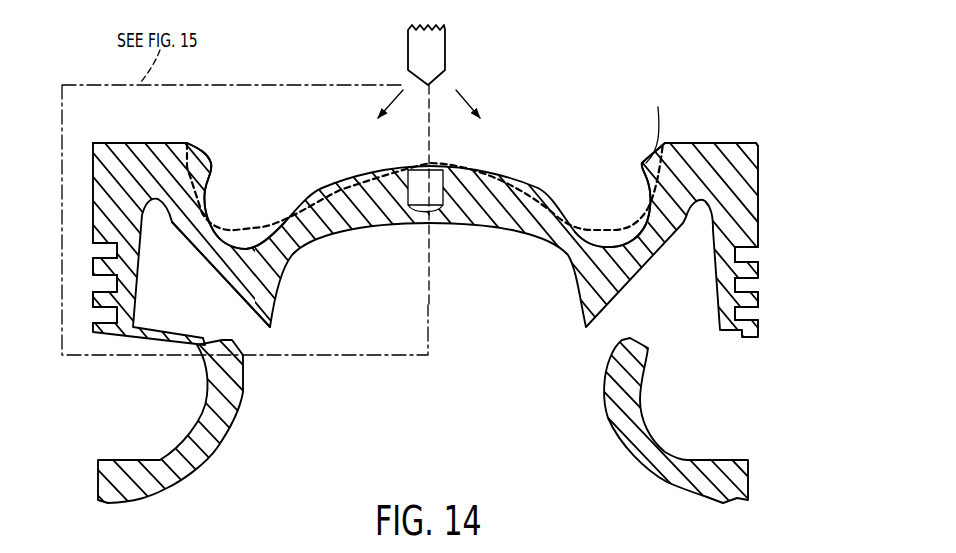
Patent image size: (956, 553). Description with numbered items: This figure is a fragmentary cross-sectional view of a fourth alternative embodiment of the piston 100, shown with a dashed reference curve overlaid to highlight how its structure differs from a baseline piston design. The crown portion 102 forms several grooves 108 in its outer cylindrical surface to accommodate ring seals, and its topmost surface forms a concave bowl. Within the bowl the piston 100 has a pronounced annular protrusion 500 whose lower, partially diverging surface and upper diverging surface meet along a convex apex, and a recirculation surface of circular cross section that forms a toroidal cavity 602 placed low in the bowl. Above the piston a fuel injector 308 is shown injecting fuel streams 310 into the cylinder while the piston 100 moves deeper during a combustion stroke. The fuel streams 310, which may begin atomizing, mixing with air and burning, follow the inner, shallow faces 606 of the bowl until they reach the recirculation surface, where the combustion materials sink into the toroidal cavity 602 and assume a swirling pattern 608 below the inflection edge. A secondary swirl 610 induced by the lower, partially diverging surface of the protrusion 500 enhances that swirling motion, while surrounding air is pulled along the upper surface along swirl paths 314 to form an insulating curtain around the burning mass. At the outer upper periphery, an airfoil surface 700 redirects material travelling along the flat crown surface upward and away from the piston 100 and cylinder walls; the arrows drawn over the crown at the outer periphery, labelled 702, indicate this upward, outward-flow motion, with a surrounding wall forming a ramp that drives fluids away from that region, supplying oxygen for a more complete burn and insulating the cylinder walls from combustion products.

The piston 100 is at (777, 72).
The crown portion 102 is at (750, 172).
The grooves 108 is at (762, 250).
The fuel injector 308 is at (438, 50).
The fuel streams 310 is at (466, 101).
The swirl paths 314 is at (225, 137).
The pronounced annular protrusion 500 is at (643, 156).
The toroidal cavity 602 is at (262, 215).
The inner shallow faces 606 is at (357, 178).
The swirling pattern 608 is at (247, 180).
The secondary swirl 610 is at (257, 155).
The airfoil surface 700 is at (737, 146).
The gas flow over crown 702 is at (116, 120).